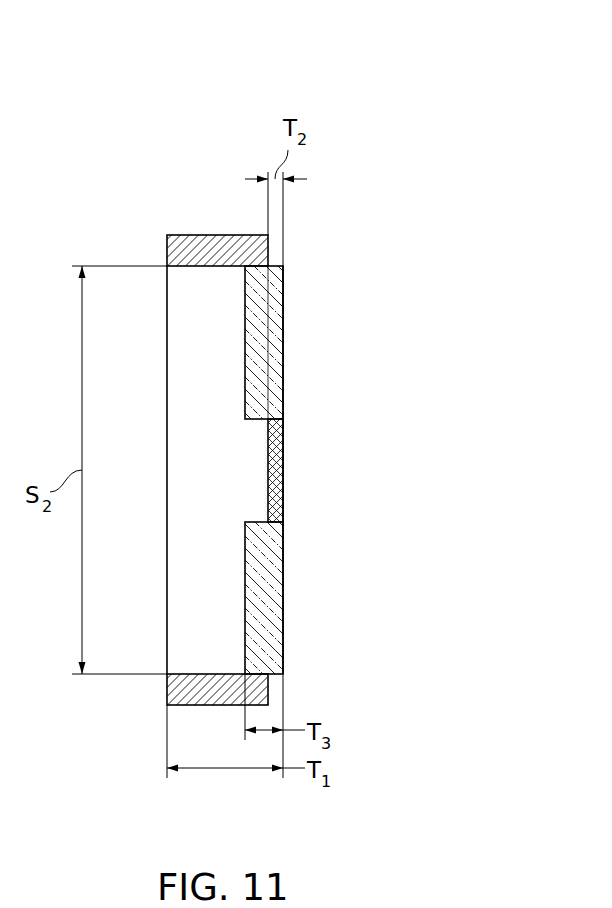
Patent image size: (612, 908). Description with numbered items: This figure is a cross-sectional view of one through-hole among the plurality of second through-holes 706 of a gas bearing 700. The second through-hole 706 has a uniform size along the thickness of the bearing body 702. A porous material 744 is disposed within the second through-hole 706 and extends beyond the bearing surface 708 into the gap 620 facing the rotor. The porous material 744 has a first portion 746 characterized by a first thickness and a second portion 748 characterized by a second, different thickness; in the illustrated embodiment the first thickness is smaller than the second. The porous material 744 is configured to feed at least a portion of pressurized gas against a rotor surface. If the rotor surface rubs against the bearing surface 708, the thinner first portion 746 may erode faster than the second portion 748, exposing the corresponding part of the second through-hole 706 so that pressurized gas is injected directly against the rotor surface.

The gas bearing 700 is at (392, 63).
The gap 620 is at (408, 406).
The bearing body 702 is at (204, 234).
The second through-hole 706 is at (163, 515).
The bearing surface 708 is at (270, 697).
The porous material 744 is at (289, 567).
The first portion 746 is at (284, 472).
The second portion 748 is at (284, 293).